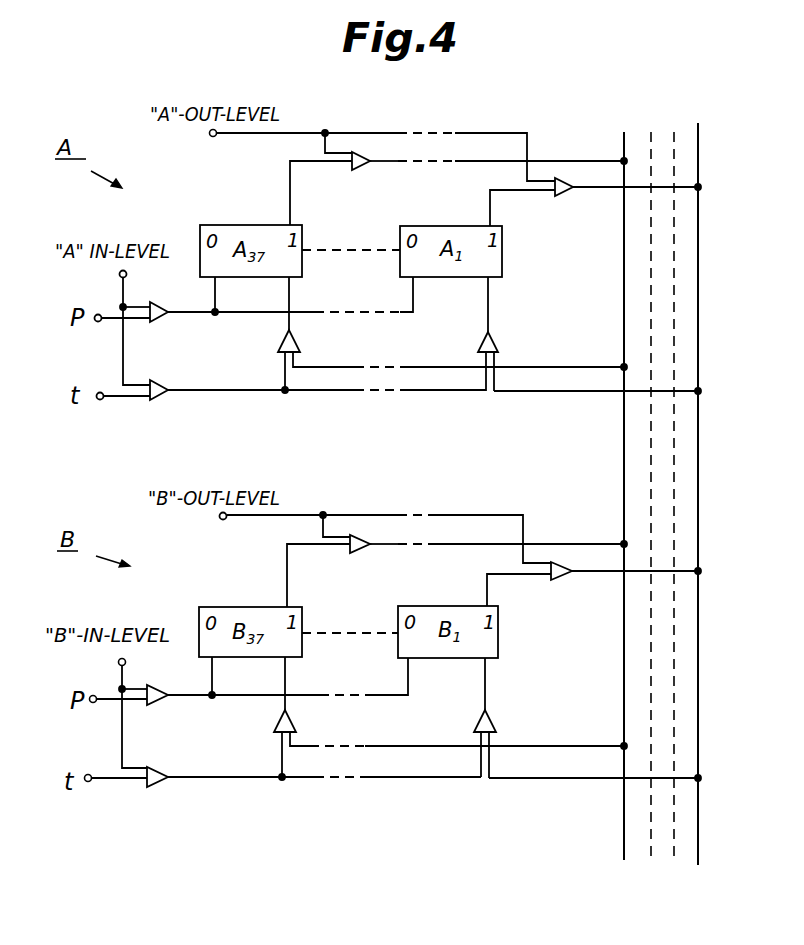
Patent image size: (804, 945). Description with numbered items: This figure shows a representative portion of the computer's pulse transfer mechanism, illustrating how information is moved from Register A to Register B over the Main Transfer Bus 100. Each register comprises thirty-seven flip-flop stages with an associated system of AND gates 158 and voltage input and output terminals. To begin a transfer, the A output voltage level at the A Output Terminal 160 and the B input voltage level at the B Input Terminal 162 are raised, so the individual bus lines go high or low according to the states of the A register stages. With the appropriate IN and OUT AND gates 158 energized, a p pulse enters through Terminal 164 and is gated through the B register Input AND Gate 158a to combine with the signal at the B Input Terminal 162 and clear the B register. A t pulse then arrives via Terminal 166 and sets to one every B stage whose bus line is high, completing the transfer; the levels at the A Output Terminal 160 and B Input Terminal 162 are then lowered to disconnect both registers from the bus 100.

The Main Transfer Bus 100 is at (662, 455).
The AND gate 158 is at (362, 170).
The B register Input AND Gate 158a is at (152, 767).
The A Output Terminal 160 is at (213, 137).
The B Input Terminal 162 is at (118, 662).
The Terminal 164 is at (93, 703).
The Terminal 166 is at (88, 782).